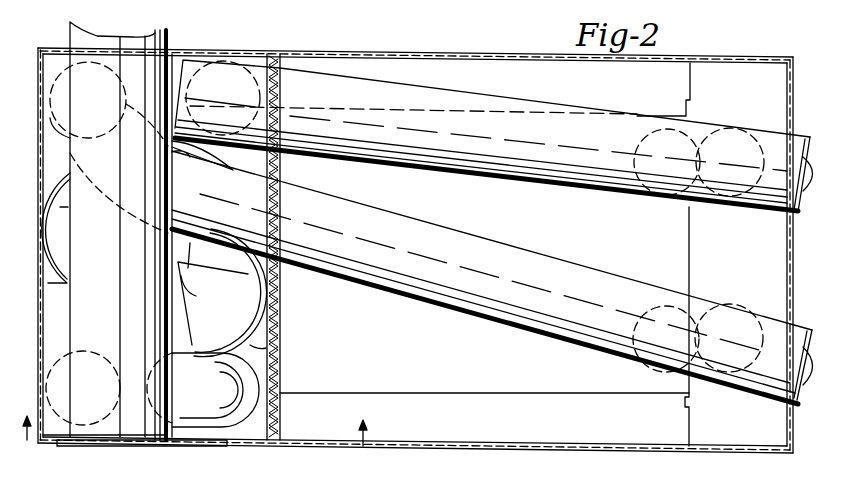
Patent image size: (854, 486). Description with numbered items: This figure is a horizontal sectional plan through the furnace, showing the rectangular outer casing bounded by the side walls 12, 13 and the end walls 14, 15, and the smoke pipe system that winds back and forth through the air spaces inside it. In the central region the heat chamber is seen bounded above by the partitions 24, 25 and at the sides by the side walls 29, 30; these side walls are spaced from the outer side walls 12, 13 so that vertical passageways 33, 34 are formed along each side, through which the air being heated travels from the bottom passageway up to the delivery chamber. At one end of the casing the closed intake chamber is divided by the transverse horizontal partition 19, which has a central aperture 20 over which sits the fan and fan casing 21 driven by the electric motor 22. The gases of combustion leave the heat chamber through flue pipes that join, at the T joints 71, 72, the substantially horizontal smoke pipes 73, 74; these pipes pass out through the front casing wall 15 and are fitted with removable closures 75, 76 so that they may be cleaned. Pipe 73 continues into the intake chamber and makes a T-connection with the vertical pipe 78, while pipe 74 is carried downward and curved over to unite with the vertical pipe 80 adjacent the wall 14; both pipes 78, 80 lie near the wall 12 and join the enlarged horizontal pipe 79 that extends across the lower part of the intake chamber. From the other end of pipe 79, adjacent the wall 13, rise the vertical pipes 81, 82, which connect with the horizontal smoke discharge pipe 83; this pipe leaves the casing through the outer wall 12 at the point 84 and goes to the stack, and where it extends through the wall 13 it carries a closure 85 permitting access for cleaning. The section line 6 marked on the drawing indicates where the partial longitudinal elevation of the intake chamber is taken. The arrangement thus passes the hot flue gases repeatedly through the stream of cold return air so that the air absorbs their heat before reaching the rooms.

The section line 6- 6 is at (192, 424).
The side wall 12 is at (452, 58).
The side wall 13 is at (593, 446).
The end wall 14 is at (40, 178).
The end wall 15 is at (785, 437).
The transverse horizontal partition 19 is at (283, 355).
The central aperture 20 is at (283, 314).
The fan and fan casing 21 is at (283, 286).
The electric motor 22 is at (184, 276).
The partition 24 is at (427, 363).
The partition 25 is at (593, 377).
The side wall 29 is at (647, 112).
The side wall 30 is at (462, 392).
The vertical passageway 33 is at (397, 73).
The vertical passageway 34 is at (492, 443).
The T joint 71 is at (752, 137).
The T joint 72 is at (750, 316).
The horizontal smoke pipe 73 is at (513, 130).
The horizontal smoke pipe 74 is at (452, 285).
The removable closure 75 is at (806, 135).
The removable closure 76 is at (808, 330).
The vertical pipe 78 is at (217, 480).
The enlarged horizontal pipe 79 is at (283, 161).
The vertical pipe 80 is at (53, 118).
The vertical pipe 81 is at (240, 377).
The vertical pipe 82 is at (55, 360).
The horizontal smoke discharge pipe 83 is at (160, 78).
The wall passage of pipe 83 84 is at (80, 38).
The closure 85 is at (97, 443).